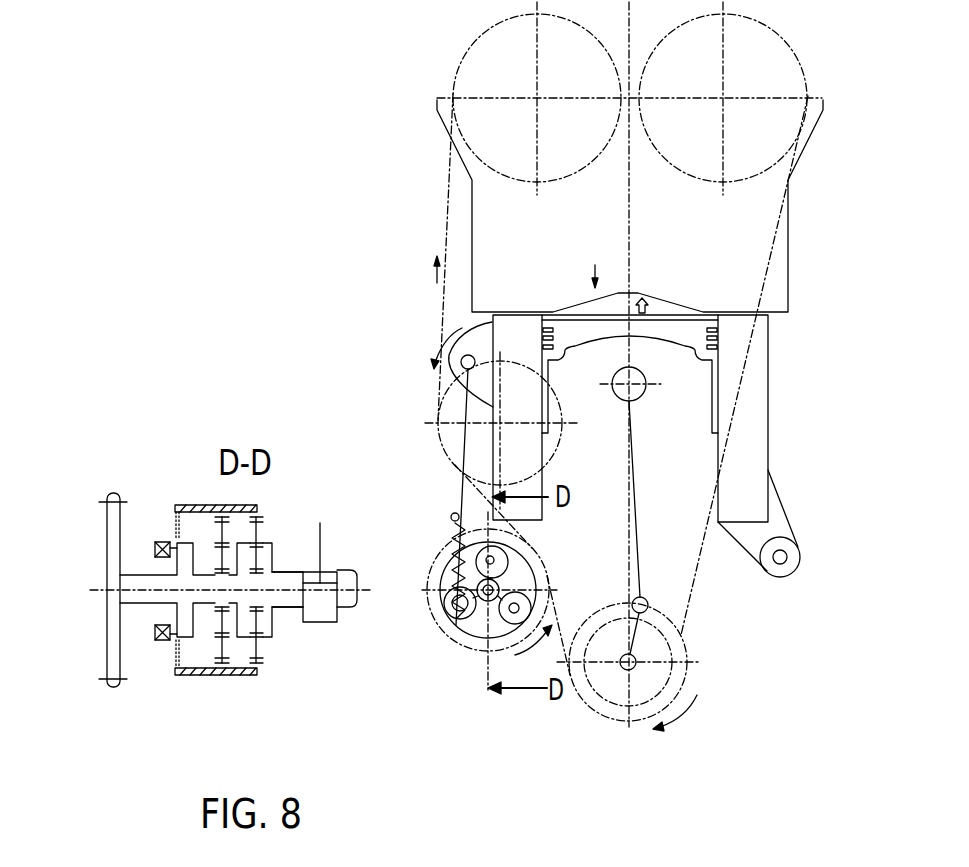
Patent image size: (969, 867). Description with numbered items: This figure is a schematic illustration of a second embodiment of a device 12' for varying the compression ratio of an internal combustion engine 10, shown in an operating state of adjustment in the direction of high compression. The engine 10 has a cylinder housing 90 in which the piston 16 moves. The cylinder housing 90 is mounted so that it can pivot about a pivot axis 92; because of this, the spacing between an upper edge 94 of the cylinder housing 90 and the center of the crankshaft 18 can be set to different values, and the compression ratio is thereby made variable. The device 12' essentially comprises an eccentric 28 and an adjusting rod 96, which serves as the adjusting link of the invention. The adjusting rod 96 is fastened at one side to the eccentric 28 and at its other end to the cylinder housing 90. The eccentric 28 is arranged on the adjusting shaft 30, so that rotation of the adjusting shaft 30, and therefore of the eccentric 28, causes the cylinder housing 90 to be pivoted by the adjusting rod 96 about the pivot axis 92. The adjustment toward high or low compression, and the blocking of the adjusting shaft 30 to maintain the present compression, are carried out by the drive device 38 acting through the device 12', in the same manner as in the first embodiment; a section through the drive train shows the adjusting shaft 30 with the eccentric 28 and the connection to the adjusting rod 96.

The internal combustion engine 10 is at (398, 171).
The device for varying the compression ratio 12' is at (387, 455).
The piston 16 is at (697, 338).
The crankshaft 18 is at (633, 647).
The eccentric 28 is at (457, 628).
The adjusting shaft 30 is at (286, 608).
The drive device 38 is at (86, 622).
The cylinder housing 90 is at (753, 398).
The pivot axis 92 is at (790, 557).
The upper edge of the cylinder housing 94 is at (757, 317).
The adjusting rod 96 is at (458, 443).